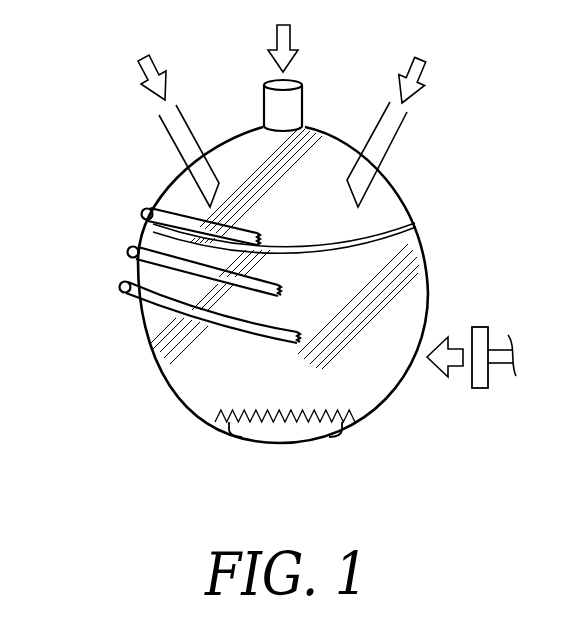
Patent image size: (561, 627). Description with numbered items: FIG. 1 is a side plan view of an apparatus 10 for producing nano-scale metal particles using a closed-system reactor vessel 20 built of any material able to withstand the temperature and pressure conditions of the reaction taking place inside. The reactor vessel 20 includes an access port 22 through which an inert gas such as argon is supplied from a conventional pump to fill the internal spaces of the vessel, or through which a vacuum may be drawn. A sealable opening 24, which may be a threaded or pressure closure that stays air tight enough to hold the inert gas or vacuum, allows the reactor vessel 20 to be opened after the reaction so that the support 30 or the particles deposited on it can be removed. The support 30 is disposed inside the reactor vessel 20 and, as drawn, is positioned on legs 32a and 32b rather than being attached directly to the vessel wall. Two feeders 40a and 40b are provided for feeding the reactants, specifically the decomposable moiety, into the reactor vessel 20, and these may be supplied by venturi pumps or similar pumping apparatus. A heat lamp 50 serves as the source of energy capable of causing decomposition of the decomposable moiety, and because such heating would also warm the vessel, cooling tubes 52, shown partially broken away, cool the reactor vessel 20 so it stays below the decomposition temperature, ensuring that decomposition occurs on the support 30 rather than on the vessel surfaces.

The apparatus 10 is at (95, 78).
The reactor vessel 20 is at (428, 280).
The access port 22 is at (303, 102).
The sealable opening 24 is at (414, 224).
The support 30 is at (248, 422).
The leg 32a is at (242, 437).
The leg 32b is at (329, 437).
The feeder 40a is at (177, 128).
The feeder 40b is at (392, 145).
The heat lamp 50 is at (480, 388).
The cooling tubes 52 is at (141, 215).